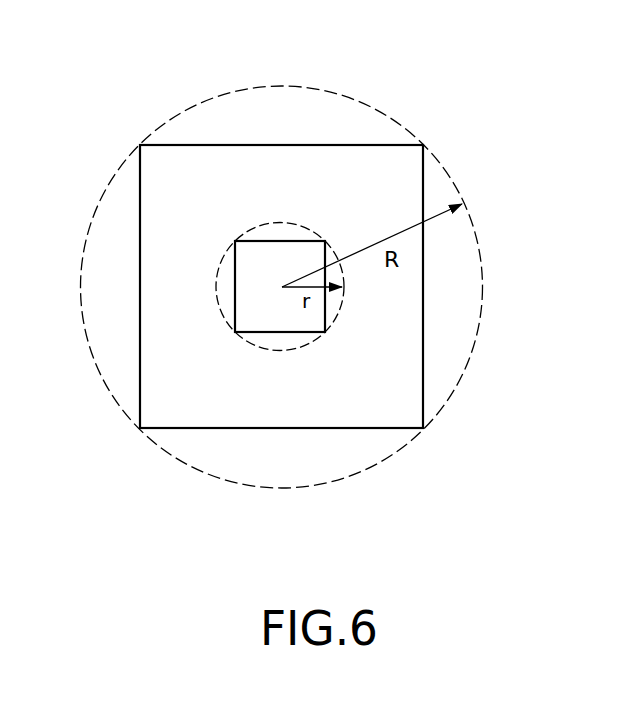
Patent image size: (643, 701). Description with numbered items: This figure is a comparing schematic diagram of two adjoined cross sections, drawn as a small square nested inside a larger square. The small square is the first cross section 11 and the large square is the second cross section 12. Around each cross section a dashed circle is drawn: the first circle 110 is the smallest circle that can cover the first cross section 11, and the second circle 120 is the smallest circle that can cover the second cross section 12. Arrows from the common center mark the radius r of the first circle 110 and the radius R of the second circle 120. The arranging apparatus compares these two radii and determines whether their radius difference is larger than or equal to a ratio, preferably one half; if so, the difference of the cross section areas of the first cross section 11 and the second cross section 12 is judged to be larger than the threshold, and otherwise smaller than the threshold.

The second cross section 12 is at (340, 145).
The first cross section 11 is at (298, 240).
The second circle 120 is at (482, 293).
The first circle 110 is at (342, 312).